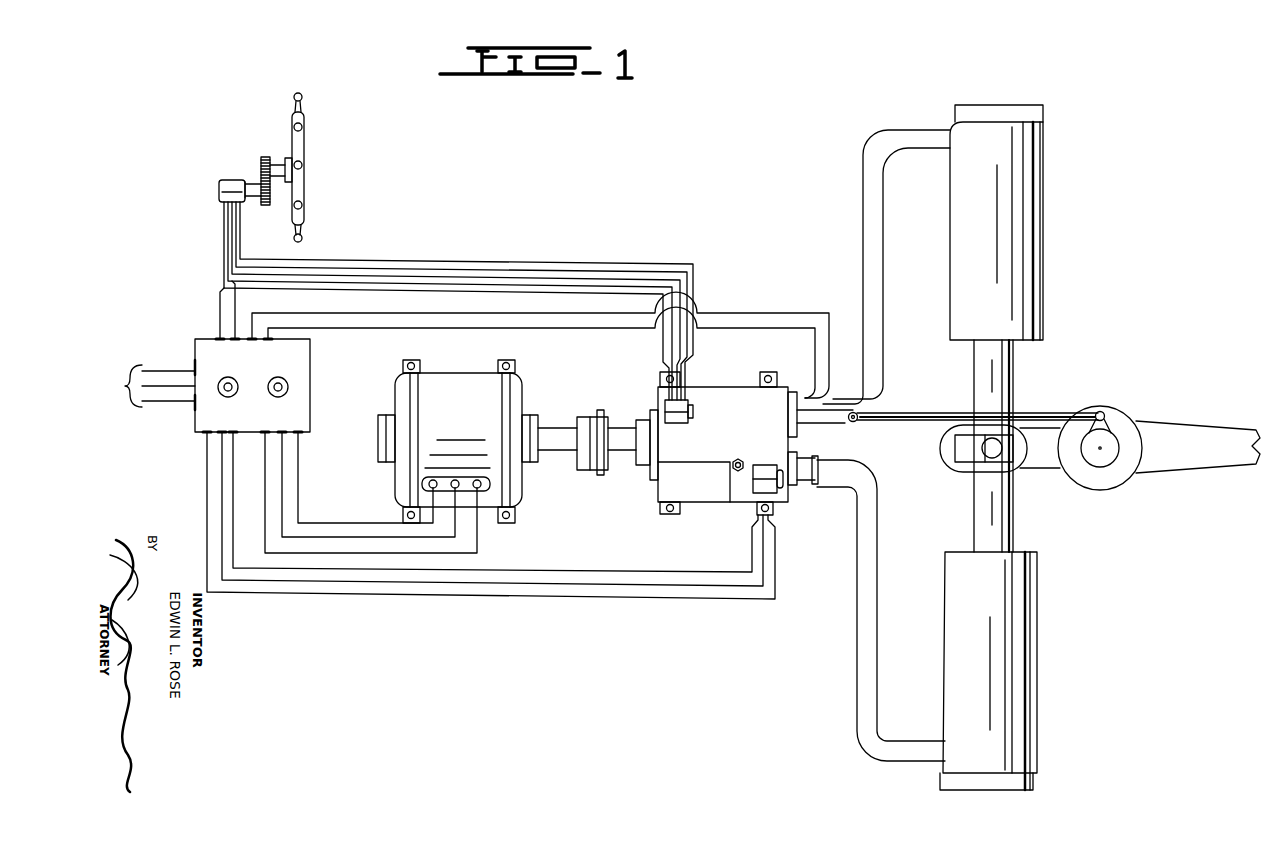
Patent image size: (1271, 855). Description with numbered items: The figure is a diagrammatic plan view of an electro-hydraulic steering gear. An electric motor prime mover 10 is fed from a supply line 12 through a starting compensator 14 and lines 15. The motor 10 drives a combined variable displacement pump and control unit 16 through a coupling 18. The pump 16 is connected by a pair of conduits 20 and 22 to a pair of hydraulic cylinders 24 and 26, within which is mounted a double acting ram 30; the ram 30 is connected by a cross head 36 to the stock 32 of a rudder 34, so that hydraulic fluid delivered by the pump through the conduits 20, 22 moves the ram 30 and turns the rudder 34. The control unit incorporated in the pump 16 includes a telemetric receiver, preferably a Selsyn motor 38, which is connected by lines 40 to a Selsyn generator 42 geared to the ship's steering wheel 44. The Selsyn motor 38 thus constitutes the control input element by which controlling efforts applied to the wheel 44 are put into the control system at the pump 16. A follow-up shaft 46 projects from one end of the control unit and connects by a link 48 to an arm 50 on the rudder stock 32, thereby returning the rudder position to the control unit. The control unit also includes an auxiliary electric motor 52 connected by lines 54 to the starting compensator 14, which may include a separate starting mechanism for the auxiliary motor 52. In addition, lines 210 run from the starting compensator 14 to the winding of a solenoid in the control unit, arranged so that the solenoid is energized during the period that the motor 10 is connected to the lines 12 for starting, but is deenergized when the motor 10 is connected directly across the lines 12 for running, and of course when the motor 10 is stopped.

The electric motor prime mover 10 is at (476, 424).
The supply line 12 is at (146, 386).
The starting compensator 14 is at (262, 381).
The lines 15 is at (465, 540).
The combined variable displacement pump and control unit 16 is at (670, 483).
The coupling 18 is at (588, 417).
The conduit 20 is at (887, 370).
The conduit 22 is at (860, 628).
The hydraulic cylinder 24 is at (996, 222).
The hydraulic cylinder 26 is at (988, 671).
The double acting ram 30 is at (1013, 372).
The rudder stock 32 is at (1107, 488).
The rudder 34 is at (1140, 447).
The cross head 36 is at (991, 453).
The Selsyn motor 38 is at (665, 406).
The lines 40 is at (622, 283).
The Selsyn generator 42 is at (230, 180).
The ship's steering wheel 44 is at (304, 158).
The follow-up shaft 46 is at (828, 421).
The link 48 is at (1042, 412).
The arm 50 is at (1108, 427).
The auxiliary electric motor 52 is at (762, 465).
The lines 54 is at (570, 589).
The lines 210 is at (781, 323).